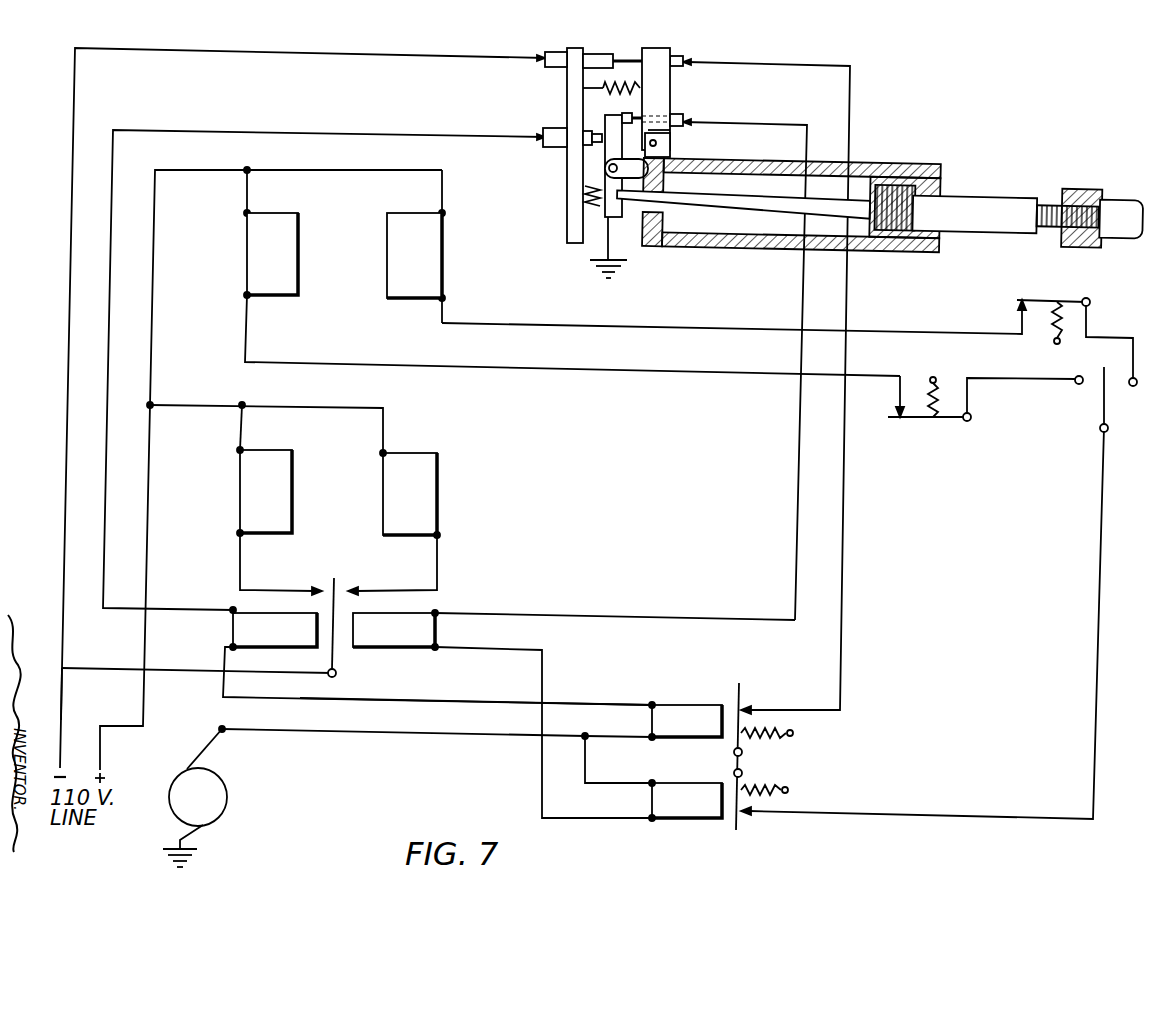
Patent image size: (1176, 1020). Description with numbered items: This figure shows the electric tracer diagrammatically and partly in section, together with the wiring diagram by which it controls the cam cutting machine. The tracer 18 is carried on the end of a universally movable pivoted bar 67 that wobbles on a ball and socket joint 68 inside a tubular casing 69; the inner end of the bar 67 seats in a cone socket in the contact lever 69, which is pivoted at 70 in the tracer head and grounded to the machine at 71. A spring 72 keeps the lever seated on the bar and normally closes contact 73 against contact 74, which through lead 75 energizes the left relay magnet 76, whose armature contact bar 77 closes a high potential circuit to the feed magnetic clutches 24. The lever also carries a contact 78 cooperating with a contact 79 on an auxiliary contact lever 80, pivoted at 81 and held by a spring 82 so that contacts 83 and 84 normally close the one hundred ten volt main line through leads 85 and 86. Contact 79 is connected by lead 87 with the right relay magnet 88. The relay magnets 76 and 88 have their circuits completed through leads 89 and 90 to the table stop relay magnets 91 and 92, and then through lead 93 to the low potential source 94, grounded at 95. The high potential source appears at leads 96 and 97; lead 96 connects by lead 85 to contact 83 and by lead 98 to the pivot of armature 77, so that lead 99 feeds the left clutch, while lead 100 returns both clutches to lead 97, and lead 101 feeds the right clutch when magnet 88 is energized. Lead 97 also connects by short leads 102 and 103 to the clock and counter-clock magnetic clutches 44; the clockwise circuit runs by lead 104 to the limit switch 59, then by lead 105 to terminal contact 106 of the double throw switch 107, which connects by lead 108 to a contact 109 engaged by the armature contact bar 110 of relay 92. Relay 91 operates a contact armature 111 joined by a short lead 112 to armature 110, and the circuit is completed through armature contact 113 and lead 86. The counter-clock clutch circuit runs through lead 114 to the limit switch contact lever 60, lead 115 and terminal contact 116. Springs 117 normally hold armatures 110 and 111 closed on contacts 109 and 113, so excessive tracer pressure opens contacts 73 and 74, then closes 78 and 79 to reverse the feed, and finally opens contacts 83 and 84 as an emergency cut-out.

The tracer 18 is at (1126, 190).
The magnetic clutches 24 is at (380, 478).
The magnetic clutches 44 is at (386, 226).
The limit switch 59 is at (922, 420).
The contact lever of rotation limit switch 60 is at (1040, 298).
The tracer bar 67 is at (996, 172).
The ball and socket joint 68 is at (896, 170).
The tubular casing and contact lever 69 is at (775, 164).
The pivot 70 is at (609, 168).
The ground 71 is at (630, 264).
The spring 72 is at (584, 201).
The contact 73 is at (598, 130).
The contact 74 is at (575, 136).
The lead 75 is at (290, 132).
The relay magnet 76 is at (249, 616).
The armature contact bar 77 is at (338, 578).
The contact 78 is at (634, 118).
The contact 79 is at (672, 110).
The auxiliary contact lever 80 is at (666, 130).
The pivot 81 is at (658, 143).
The spring 82 is at (596, 56).
The contact 83 is at (614, 84).
The contact 84 is at (644, 50).
The lead 85 is at (336, 56).
The lead 86 is at (798, 62).
The lead 87 is at (798, 418).
The relay magnet 88 is at (431, 614).
The lead 89 is at (352, 700).
The lead 90 is at (512, 658).
The table stop relay magnet 91 is at (680, 686).
The table stop relay magnet 92 is at (704, 822).
The lead 93 is at (400, 750).
The source of low potential current 94 is at (227, 797).
The ground 95 is at (197, 851).
The main line lead 96 is at (62, 690).
The main line lead 97 is at (215, 158).
The lead 98 is at (202, 698).
The lead 99 is at (300, 576).
The lead 100 is at (210, 404).
The lead 101 is at (408, 576).
The short lead 102 is at (244, 204).
The short lead 103 is at (454, 170).
The lead 104 is at (500, 375).
The lead 105 is at (1034, 380).
The terminal contact 106 is at (1076, 384).
The double throw switch 107 is at (1100, 418).
The lead 108 is at (1100, 548).
The contact 109 is at (752, 815).
The armature contact bar 110 is at (744, 778).
The contact armature 111 is at (738, 686).
The short lead 112 is at (744, 760).
The armature contact 113 is at (752, 708).
The lead 114 is at (744, 330).
The lead 115 is at (1116, 332).
The terminal contact 116 is at (1135, 387).
The springs 117 is at (794, 732).